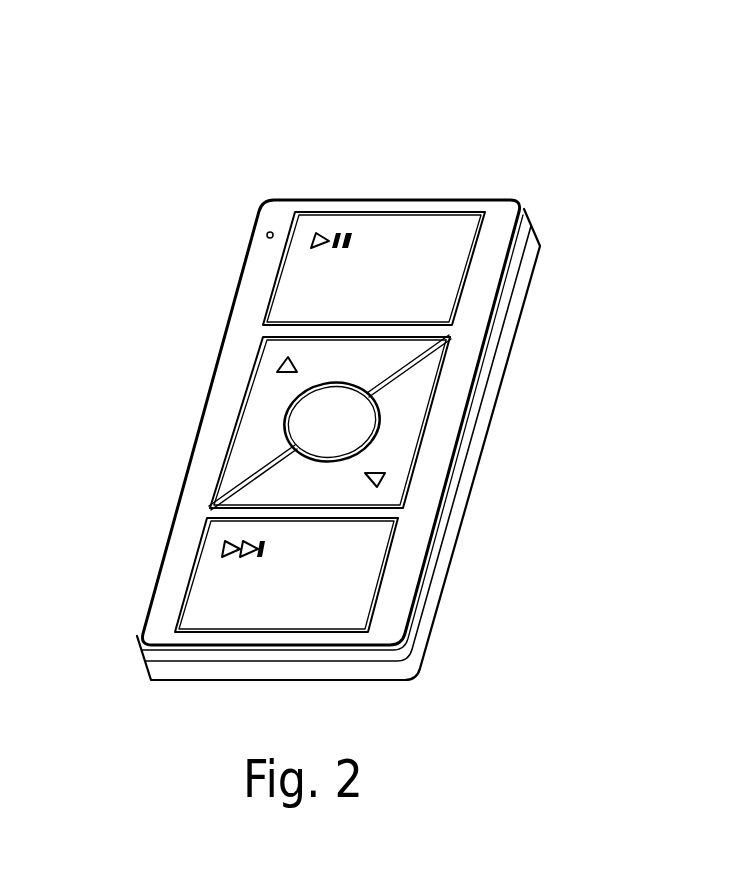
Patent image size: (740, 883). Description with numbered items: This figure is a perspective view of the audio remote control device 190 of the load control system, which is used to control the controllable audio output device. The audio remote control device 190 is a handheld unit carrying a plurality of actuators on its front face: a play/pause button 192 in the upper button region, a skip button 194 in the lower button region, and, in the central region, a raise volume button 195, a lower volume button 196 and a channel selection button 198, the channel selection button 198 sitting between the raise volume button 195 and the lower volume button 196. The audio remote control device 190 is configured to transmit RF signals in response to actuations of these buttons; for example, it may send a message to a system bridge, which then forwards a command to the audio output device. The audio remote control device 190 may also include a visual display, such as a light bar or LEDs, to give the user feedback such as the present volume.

The audio remote control device 190 is at (178, 143).
The play/pause button 192 is at (375, 245).
The skip button 194 is at (211, 608).
The raise volume button 195 is at (263, 413).
The lower volume button 196 is at (320, 478).
The channel selection button 198 is at (347, 415).